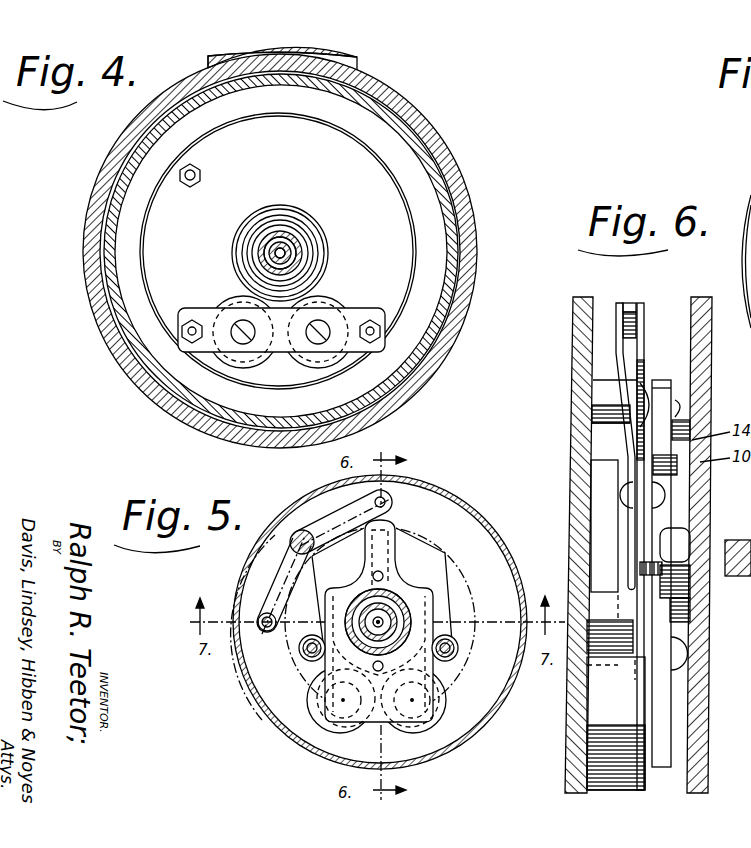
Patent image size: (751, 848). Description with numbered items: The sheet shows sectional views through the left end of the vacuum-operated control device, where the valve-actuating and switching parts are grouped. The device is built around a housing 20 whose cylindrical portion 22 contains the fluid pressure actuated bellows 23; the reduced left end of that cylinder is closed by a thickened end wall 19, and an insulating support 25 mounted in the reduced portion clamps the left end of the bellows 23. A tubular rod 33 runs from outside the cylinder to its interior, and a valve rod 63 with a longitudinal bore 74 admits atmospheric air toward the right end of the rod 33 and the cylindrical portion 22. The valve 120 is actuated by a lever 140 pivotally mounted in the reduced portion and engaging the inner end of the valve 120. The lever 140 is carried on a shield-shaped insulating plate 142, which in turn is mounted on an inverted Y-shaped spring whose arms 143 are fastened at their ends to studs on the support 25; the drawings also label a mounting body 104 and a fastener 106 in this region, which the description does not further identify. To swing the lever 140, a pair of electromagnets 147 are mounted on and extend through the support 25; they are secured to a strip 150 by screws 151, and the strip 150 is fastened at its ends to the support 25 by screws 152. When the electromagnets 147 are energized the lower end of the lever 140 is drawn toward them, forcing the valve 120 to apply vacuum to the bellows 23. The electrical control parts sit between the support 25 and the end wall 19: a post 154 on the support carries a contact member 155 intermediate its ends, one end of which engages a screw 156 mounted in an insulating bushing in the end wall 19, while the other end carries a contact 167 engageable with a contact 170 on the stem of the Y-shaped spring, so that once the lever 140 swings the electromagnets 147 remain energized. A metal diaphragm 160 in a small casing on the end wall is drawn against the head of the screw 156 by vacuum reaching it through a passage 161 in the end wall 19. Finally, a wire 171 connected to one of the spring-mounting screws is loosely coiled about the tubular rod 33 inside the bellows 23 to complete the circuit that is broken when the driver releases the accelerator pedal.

In FIG. 6, the end wall 19 is at (700, 365).
In FIG. 5, the housing 20 is at (475, 535).
In FIG. 4, the cylindrical portion 22 is at (450, 172).
In FIG. 6, the cylindrical portion 22 is at (656, 545).
In FIG. 4, the bellows 23 is at (440, 150).
In FIG. 4, the support 25 is at (400, 225).
In FIG. 5, the support 25 is at (483, 545).
In FIG. 6, the support 25 is at (582, 340).
In FIG. 4, the tubular rod 33 is at (292, 246).
In FIG. 5, the tubular rod 33 is at (396, 598).
In FIG. 4, the valve rod 63 is at (268, 252).
In FIG. 4, the longitudinal bore 74 is at (300, 256).
In FIG. 5, the housing 104 is at (393, 522).
In FIG. 6, the housing 104 is at (618, 345).
In FIG. 5, the screw 106 is at (462, 650).
In FIG. 6, the screw 106 is at (700, 640).
In FIG. 6, the valve 120 is at (692, 406).
In FIG. 5, the lever 140 is at (436, 682).
In FIG. 5, the insulating plate 142 is at (462, 588).
In FIG. 6, the insulating plate 142 is at (643, 515).
In FIG. 5, the arms 143 is at (458, 634).
In FIG. 4, the electromagnets 147 is at (240, 305).
In FIG. 5, the electromagnets 147 is at (440, 702).
In FIG. 6, the electromagnets 147 is at (580, 735).
In FIG. 4, the strip 150 is at (370, 310).
In FIG. 4, the screws 151 is at (278, 356).
In FIG. 4, the screws 152 is at (195, 340).
In FIG. 5, the post 154 is at (298, 538).
In FIG. 6, the post 154 is at (600, 392).
In FIG. 5, the contact member 155 is at (284, 572).
In FIG. 6, the contact member 155 is at (645, 355).
In FIG. 5, the screw 156 is at (266, 612).
In FIG. 6, the screw 156 is at (648, 548).
In FIG. 6, the metal diaphragm 160 is at (692, 560).
In FIG. 6, the passage 161 is at (692, 612).
In FIG. 6, the contact 167 is at (640, 300).
In FIG. 6, the contact 170 is at (628, 305).
In FIG. 4, the wire 171 is at (258, 226).